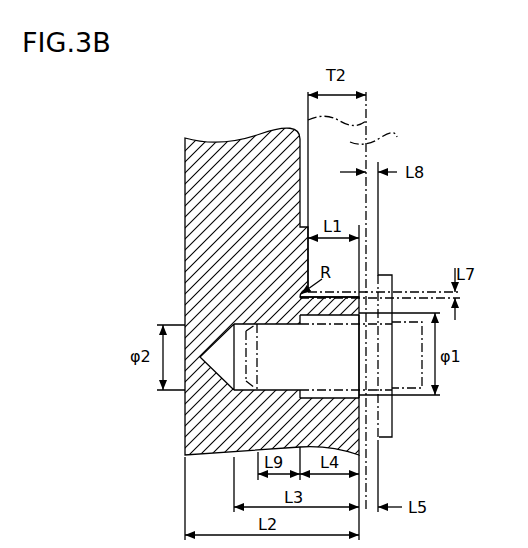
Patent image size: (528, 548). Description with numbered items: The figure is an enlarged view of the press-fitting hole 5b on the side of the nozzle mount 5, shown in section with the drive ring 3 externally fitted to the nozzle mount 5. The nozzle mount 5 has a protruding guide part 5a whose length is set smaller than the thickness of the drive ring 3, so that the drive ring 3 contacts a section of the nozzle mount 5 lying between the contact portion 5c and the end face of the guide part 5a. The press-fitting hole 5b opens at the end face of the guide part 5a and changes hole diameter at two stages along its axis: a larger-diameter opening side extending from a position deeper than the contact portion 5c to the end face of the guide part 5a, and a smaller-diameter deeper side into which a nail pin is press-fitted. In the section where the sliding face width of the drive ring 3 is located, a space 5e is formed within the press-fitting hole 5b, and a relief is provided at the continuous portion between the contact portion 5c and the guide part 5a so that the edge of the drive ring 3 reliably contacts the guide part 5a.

The drive ring 3 is at (334, 302).
The nozzle mount 5 is at (208, 186).
The guide part 5a is at (343, 300).
The press-fitting hole 5b is at (240, 330).
The contact portion 5c is at (309, 256).
The space 5e is at (339, 394).